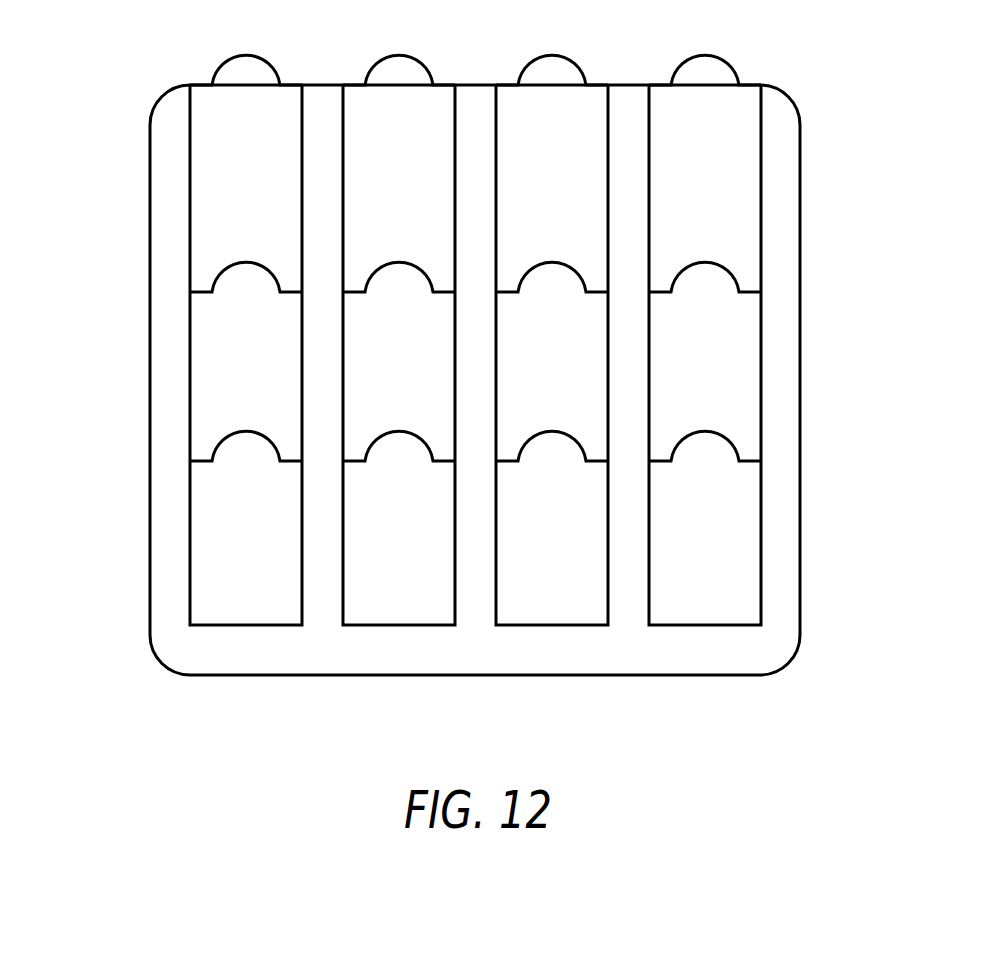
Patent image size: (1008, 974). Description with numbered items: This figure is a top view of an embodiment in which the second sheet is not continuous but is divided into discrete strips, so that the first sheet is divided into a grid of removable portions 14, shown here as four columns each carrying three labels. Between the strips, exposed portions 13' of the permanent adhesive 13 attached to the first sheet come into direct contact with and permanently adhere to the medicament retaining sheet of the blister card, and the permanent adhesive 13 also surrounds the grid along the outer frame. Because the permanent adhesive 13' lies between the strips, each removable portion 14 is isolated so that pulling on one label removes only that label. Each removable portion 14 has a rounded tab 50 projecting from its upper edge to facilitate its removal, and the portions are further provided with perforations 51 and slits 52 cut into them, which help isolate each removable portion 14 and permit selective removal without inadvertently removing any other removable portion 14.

The permanent adhesive 13 is at (474, 380).
The portions of permanent adhesive 13' is at (417, 313).
The removable portion 14 is at (717, 160).
The tab 50 is at (708, 56).
The perforations 51 is at (765, 558).
The slits 52 is at (760, 458).